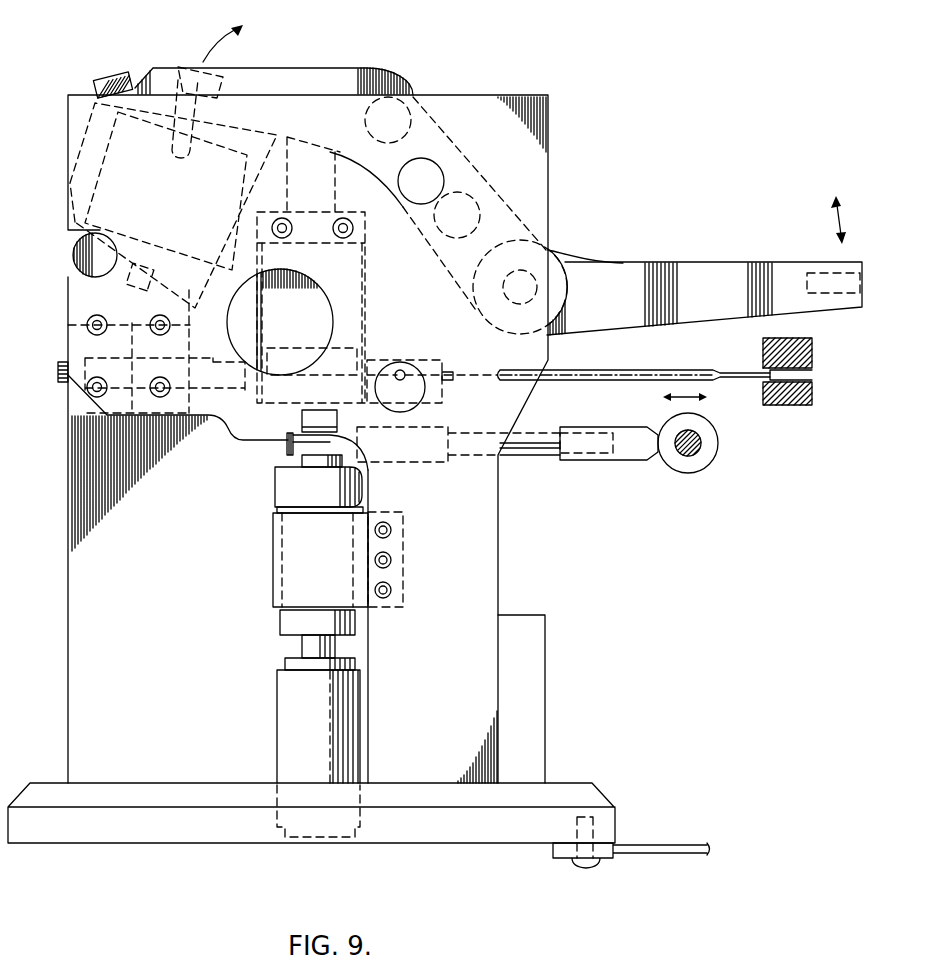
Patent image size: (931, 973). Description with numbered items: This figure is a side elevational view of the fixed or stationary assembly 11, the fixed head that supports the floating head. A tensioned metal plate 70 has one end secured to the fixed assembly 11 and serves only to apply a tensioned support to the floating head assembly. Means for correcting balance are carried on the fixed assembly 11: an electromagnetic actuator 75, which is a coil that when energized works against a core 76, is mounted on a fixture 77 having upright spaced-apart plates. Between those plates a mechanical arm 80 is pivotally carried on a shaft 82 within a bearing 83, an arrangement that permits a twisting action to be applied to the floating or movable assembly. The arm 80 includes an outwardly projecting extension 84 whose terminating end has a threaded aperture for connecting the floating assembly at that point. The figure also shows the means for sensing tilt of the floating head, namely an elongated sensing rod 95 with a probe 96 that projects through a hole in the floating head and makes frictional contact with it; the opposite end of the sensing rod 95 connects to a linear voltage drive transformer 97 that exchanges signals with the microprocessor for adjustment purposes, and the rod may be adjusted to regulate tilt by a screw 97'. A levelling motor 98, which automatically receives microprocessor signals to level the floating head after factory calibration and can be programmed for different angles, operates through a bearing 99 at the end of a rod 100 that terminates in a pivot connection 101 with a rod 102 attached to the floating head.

The fixed assembly 11 is at (623, 530).
The tensioned metal plate 70 is at (690, 845).
The electromagnetic actuator 75 is at (116, 80).
The core 76 is at (72, 240).
The fixture 77 is at (570, 785).
The mechanical arm 80 is at (375, 79).
The shaft 82 is at (530, 272).
The bearing 83 is at (567, 290).
The outwardly projecting extension 84 is at (717, 274).
The elongated sensing rod 95 is at (700, 370).
The probe 96 is at (813, 375).
The linear voltage drive transformer 97 is at (432, 368).
The screw 97' is at (132, 351).
The levelling motor 98 is at (290, 624).
The bearing 99 is at (286, 447).
The rod 100 is at (527, 462).
The pivot connection 101 is at (716, 452).
The rod 102 is at (703, 438).